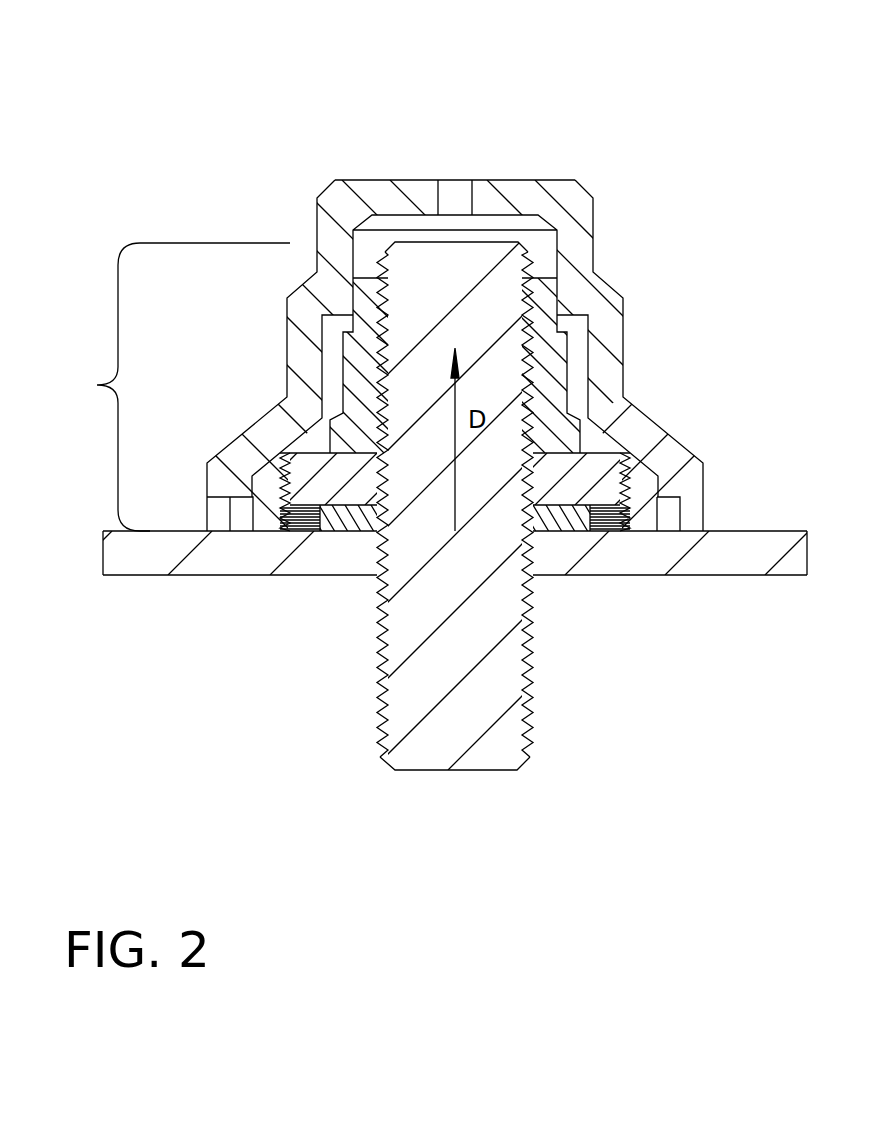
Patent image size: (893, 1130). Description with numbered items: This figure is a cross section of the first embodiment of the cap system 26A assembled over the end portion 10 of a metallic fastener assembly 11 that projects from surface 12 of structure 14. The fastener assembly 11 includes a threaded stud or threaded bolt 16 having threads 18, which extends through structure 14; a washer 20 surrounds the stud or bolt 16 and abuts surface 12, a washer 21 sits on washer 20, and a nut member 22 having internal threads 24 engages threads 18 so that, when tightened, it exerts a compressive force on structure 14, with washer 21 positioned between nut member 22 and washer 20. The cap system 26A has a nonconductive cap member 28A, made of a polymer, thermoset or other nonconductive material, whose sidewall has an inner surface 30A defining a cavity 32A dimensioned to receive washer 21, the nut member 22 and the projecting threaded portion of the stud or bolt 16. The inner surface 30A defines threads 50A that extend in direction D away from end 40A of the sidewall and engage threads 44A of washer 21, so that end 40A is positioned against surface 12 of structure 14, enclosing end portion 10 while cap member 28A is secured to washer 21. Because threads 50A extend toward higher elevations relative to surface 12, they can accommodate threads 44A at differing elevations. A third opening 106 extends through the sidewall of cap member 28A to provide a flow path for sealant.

The end portion 10 is at (97, 385).
The metallic fastener assembly 11 is at (402, 635).
The surface 12 is at (763, 531).
The structure 14 is at (775, 552).
The threaded stud or threaded bolt 16 is at (462, 720).
The threads 18 is at (536, 652).
The washer 20 is at (553, 522).
The washer 21 is at (632, 455).
The nut member 22 is at (545, 395).
The threads 24 is at (537, 365).
The cap system 26A is at (686, 86).
The cap member 28A is at (513, 190).
The inner surface 30A is at (353, 227).
The cavity 32A is at (380, 213).
The end 40A is at (699, 545).
The threads 44A is at (292, 485).
The threads 50A is at (303, 523).
The third opening 106 is at (467, 180).